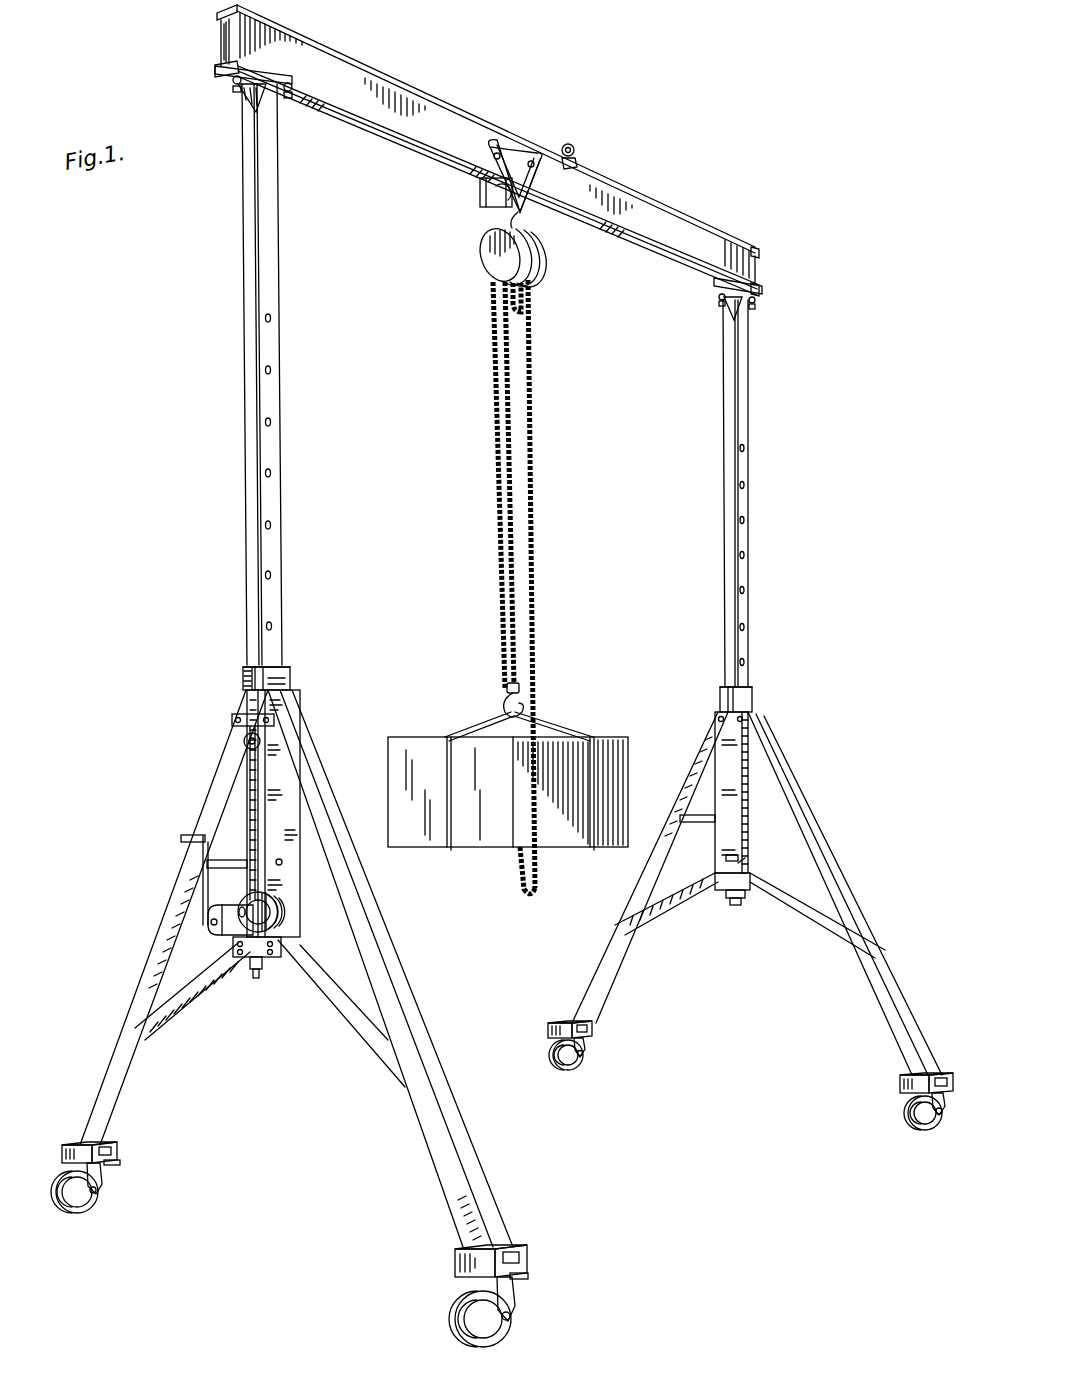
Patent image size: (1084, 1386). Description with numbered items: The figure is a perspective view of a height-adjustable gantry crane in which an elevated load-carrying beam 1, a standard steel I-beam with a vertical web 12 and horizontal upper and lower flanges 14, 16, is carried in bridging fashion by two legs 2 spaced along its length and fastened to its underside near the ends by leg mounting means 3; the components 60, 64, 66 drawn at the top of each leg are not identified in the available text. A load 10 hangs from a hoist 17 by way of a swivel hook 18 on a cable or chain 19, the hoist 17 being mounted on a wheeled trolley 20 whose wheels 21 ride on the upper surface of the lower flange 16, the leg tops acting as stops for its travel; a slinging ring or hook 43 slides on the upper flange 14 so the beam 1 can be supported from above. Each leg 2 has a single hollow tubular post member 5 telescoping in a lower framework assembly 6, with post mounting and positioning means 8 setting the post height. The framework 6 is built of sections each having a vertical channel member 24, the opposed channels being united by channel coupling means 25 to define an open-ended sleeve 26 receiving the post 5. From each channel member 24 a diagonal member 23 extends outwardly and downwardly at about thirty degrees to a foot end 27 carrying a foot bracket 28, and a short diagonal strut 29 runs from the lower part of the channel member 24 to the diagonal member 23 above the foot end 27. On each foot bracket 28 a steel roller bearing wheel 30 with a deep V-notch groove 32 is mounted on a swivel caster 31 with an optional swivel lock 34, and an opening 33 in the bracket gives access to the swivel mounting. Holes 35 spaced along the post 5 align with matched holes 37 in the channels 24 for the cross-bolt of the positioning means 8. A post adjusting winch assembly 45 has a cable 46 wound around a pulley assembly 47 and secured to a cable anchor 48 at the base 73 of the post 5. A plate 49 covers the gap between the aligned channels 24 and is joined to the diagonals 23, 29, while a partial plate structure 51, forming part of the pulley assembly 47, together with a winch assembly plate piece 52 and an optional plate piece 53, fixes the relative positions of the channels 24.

The beam 1 is at (404, 83).
The leg 2 is at (240, 224).
The leg mounting means 3 is at (478, 212).
The post member 5 is at (244, 347).
The lower framework assembly 6 is at (511, 968).
The post mounting and positioning means 8 is at (231, 857).
The load 10 is at (610, 736).
The web 12 is at (220, 37).
The upper flange 14 is at (268, 23).
The lower flange 16 is at (376, 130).
The hoist 17 is at (488, 262).
The swivel hook 18 is at (520, 703).
The cable or chain 19 is at (522, 583).
The wheeled trolley 20 is at (488, 196).
The trolley wheels 21 is at (498, 148).
The diagonal member 23 is at (140, 978).
The channel member 24 is at (248, 668).
The channel coupling means 25 is at (302, 896).
The sleeve 26 is at (283, 666).
The foot end 27 is at (118, 1141).
The foot bracket 28 is at (73, 1141).
The diagonal strut 29 is at (184, 1012).
The roller bearing wheel 30 is at (92, 1207).
The swivel caster 31 is at (100, 1186).
The V-notch groove 32 is at (58, 1210).
The opening 33 is at (115, 1153).
The swivel lock 34 is at (125, 1166).
The holes 35 is at (272, 318).
The matched holes 37 is at (281, 858).
The slinging ring or hook 43 is at (574, 151).
The post adjusting winch assembly 45 is at (211, 913).
The cable 46 is at (256, 769).
The pulley assembly 47 is at (244, 741).
The cable anchor 48 is at (257, 980).
The plate 49 is at (282, 910).
The partial plate structure 51 is at (232, 718).
The winch assembly plate piece 52 is at (240, 960).
The plate piece 53 is at (286, 943).
The clamp plate 60 is at (224, 72).
The clamp gusset 64 is at (245, 110).
The clamp bolts 66 is at (238, 92).
The base of post member 73 is at (737, 903).